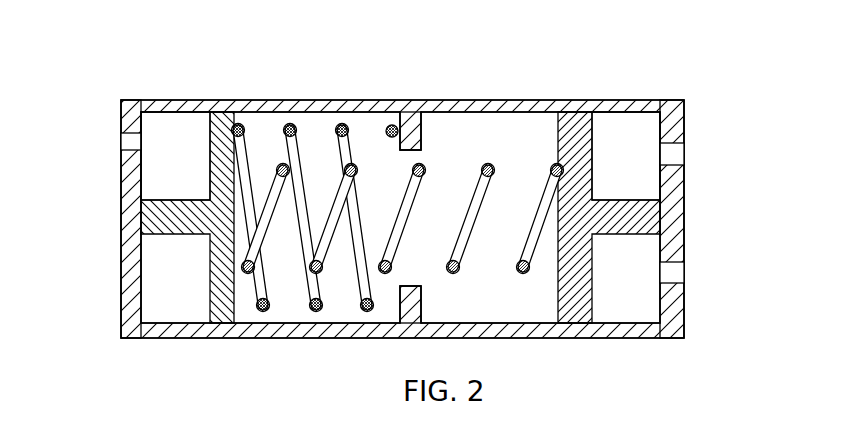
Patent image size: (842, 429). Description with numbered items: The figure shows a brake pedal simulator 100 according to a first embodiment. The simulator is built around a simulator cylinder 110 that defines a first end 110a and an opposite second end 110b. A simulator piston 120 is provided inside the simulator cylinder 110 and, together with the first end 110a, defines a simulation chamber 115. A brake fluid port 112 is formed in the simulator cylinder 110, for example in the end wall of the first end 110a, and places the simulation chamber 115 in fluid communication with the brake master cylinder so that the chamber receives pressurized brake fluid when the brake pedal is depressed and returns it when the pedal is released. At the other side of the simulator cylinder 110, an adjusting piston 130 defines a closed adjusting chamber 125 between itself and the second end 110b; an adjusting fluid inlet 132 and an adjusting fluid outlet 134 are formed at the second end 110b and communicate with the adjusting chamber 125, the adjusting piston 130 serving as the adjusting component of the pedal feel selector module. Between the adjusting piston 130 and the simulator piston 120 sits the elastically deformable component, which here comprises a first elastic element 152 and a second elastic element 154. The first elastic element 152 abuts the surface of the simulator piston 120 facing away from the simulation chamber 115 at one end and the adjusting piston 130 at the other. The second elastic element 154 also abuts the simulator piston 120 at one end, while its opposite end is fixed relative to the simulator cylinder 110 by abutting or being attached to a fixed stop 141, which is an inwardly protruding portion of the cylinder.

The brake pedal simulator 100 is at (152, 44).
The simulator cylinder 110 is at (400, 100).
The first end of the simulator cylinder 110a is at (113, 172).
The second end of the simulator cylinder 110b is at (692, 308).
The brake fluid port 112 is at (120, 133).
The simulation chamber 115 is at (165, 137).
The simulator piston 120 is at (222, 123).
The adjusting chamber 125 is at (648, 130).
The adjusting piston 130 is at (582, 118).
The adjusting fluid inlet 132 is at (680, 270).
The adjusting fluid outlet 134 is at (668, 148).
The stop 141 is at (405, 142).
The first elastic element 152 is at (488, 163).
The second elastic element 154 is at (293, 127).